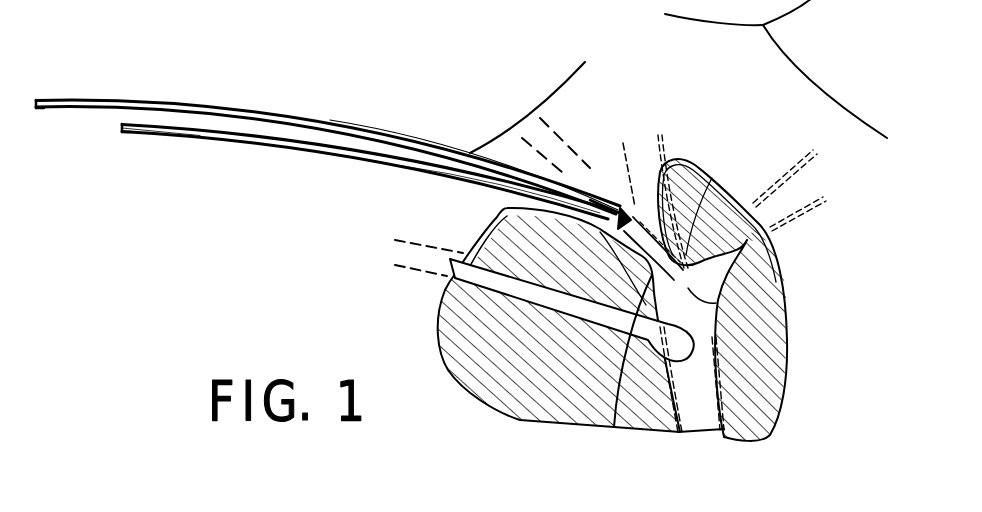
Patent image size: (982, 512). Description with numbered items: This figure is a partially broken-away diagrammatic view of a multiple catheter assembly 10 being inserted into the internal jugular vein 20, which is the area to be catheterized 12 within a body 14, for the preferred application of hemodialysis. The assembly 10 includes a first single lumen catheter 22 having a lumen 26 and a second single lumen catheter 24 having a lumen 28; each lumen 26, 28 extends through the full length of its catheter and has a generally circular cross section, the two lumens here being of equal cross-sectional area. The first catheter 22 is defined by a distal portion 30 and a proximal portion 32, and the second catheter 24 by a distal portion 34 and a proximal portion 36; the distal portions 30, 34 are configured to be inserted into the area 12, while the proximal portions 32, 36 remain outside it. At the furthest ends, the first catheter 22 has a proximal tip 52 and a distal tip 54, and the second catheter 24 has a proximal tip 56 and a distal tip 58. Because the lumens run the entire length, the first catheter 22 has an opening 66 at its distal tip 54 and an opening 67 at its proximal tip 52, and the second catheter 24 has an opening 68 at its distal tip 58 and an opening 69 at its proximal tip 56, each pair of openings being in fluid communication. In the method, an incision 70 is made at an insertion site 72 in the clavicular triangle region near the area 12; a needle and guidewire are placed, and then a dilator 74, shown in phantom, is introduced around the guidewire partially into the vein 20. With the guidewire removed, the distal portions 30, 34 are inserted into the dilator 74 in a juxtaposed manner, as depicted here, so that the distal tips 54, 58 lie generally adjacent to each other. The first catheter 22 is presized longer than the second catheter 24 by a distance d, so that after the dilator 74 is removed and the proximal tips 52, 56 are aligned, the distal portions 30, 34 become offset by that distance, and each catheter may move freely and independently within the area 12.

The multiple catheter assembly 10 is at (246, 103).
The area to be catheterized 12 is at (715, 309).
The body 14 is at (812, 78).
The internal jugular vein 20 is at (720, 344).
The first single lumen catheter 22 is at (103, 99).
The second single lumen catheter 24 is at (267, 144).
The lumen of first catheter 26 is at (313, 130).
The lumen of second catheter 28 is at (357, 158).
The distal portion of first catheter 30 is at (498, 162).
The proximal portion of first catheter 32 is at (150, 103).
The distal portion of second catheter 34 is at (488, 184).
The proximal portion of second catheter 36 is at (314, 150).
The proximal tip of first catheter 52 is at (35, 100).
The distal tip of first catheter 54 is at (704, 177).
The proximal tip of second catheter 56 is at (134, 133).
The distal tip of second catheter 58 is at (613, 430).
The opening at distal tip of first catheter 66 is at (723, 283).
The opening at proximal tip of first catheter 67 is at (37, 108).
The opening at distal tip of second catheter 68 is at (648, 433).
The opening at proximal tip of second catheter 69 is at (121, 131).
The incision 70 is at (492, 209).
The insertion site 72 is at (620, 210).
The dilator 74 is at (562, 143).